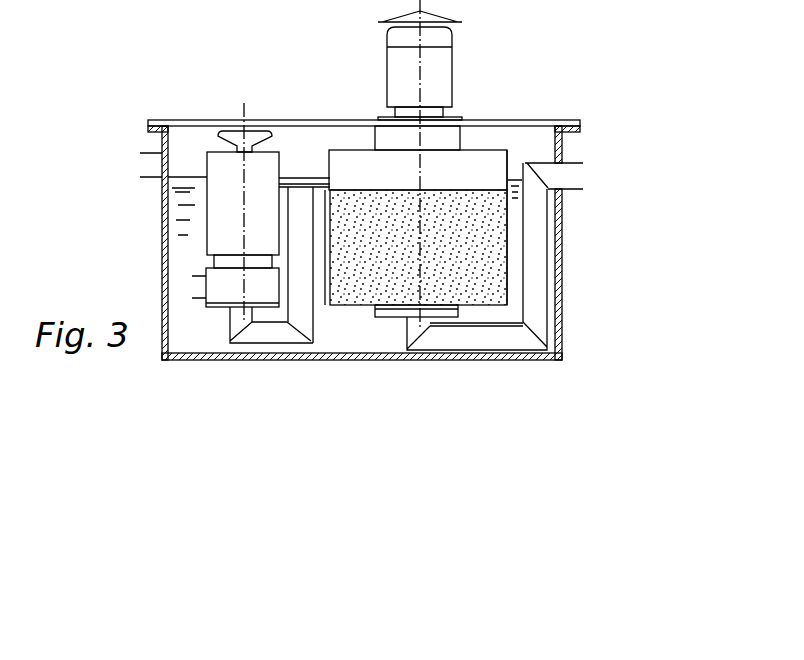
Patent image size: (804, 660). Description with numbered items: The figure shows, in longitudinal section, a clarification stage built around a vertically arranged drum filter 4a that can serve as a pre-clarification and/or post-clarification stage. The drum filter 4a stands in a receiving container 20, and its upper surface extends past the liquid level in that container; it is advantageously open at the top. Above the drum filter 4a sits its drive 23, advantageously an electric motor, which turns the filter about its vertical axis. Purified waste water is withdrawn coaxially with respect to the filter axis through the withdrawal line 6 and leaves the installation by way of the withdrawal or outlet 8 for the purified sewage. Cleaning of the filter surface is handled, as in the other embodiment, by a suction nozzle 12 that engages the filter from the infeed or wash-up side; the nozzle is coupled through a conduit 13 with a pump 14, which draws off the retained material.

The tank 20 is at (187, 360).
The drive 23 is at (445, 68).
The vertically arranged drum filter 4a is at (343, 160).
The withdrawal or outlet 8 is at (573, 176).
The pump 14 is at (220, 235).
The suction nozzle 12 is at (313, 305).
The conduit 13 is at (268, 337).
The withdrawal line 6 is at (477, 342).